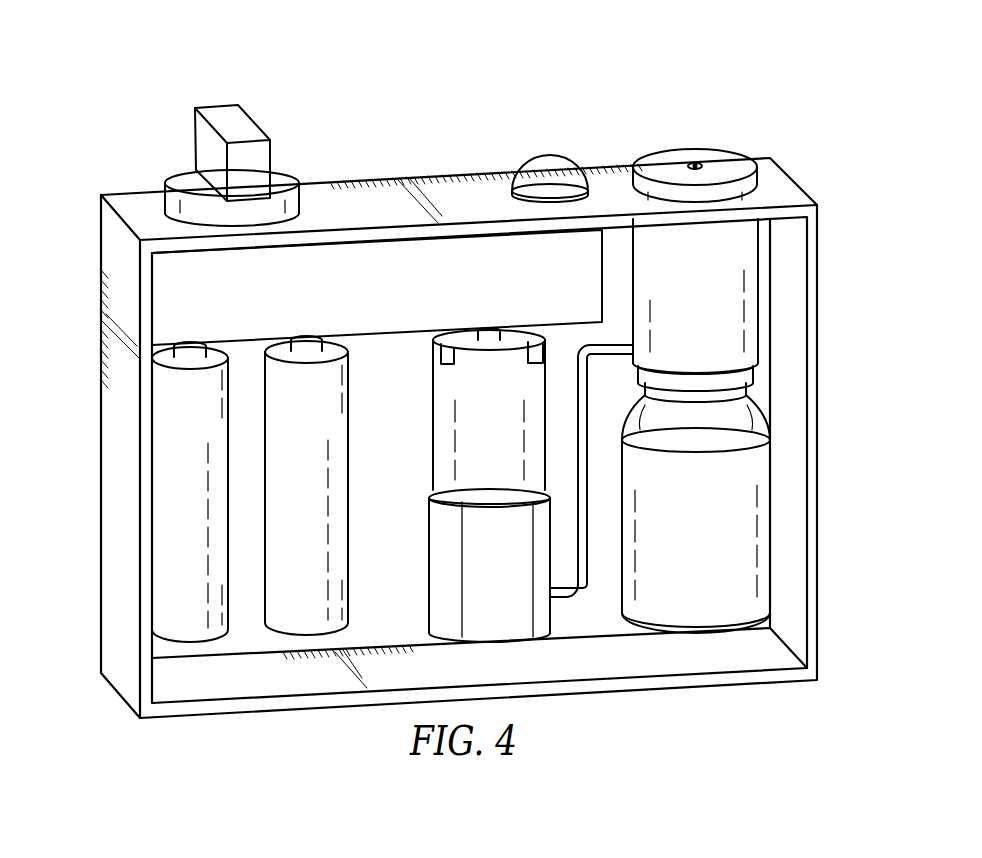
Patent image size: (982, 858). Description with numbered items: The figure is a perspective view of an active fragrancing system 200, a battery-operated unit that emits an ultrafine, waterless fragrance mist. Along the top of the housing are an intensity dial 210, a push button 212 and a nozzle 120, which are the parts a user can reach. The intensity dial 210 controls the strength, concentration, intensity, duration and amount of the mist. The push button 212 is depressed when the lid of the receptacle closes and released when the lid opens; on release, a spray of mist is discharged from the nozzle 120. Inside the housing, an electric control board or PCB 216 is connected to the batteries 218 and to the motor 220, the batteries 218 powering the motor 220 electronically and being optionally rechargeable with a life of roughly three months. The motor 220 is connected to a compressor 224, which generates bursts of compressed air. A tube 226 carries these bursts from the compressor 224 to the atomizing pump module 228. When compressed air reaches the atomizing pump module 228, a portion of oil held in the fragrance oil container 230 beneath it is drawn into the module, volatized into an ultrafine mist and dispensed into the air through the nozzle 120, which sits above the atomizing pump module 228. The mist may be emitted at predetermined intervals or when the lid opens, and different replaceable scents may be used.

The active fragrancing system 200 is at (351, 41).
The intensity dial 210 is at (208, 101).
The push button 212 is at (535, 154).
The nozzle 120 is at (690, 158).
The electric control board or PCB 216 is at (468, 262).
The batteries 218 is at (175, 527).
The motor 220 is at (447, 427).
The compressor 224 is at (470, 575).
The tube 226 is at (587, 509).
The atomizing pump module 228 is at (752, 327).
The fragrance oil container 230 is at (747, 550).